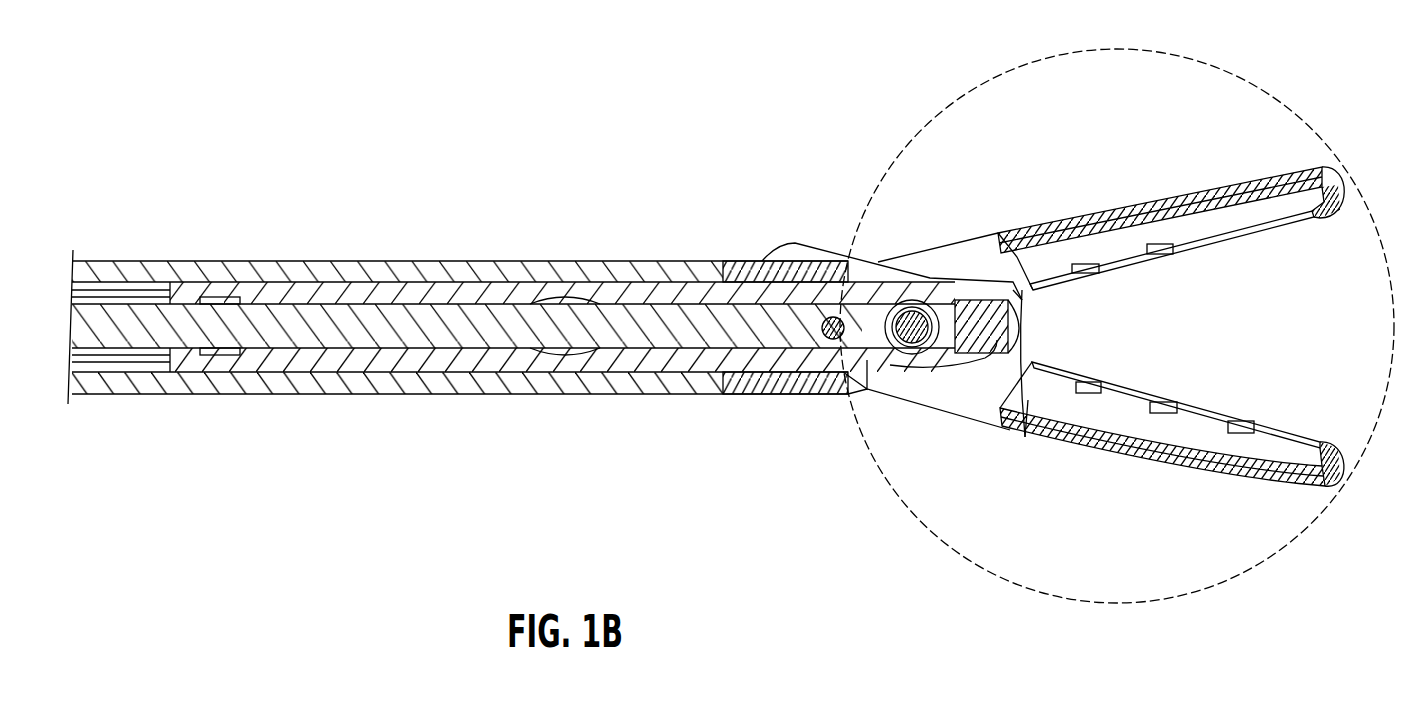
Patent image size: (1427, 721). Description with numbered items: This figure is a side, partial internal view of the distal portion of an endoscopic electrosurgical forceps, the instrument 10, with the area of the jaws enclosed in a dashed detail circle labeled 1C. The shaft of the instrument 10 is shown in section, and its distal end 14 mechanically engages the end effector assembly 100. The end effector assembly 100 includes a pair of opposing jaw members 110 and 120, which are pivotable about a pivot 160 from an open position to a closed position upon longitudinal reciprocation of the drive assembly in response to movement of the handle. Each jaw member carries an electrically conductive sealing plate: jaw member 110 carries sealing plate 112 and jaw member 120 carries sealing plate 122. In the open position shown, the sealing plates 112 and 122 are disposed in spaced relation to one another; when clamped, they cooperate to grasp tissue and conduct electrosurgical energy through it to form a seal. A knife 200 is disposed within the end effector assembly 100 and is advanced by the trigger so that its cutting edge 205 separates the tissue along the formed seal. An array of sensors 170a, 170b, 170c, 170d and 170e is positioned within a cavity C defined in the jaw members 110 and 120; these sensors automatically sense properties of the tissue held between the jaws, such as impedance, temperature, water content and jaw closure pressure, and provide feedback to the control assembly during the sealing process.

The instrument 10 is at (730, 206).
The distal end 14 is at (690, 260).
The detail view of FIG. 1C is at (1118, 52).
The end effector assembly 100 is at (1310, 150).
The jaw member 110 is at (1182, 206).
The electrically conductive sealing plate 112 is at (1284, 240).
The jaw member 120 is at (1179, 467).
The electrically conductive sealing plate 122 is at (1276, 418).
The pivot 160 is at (918, 357).
The sensor 170a is at (1078, 262).
The sensor 170b is at (1152, 243).
The sensor 170c is at (1242, 435).
The sensor 170d is at (1167, 415).
The sensor 170e is at (1090, 396).
The knife 200 is at (1026, 322).
The cutting edge 205 is at (1025, 437).
The cavity C is at (1212, 332).